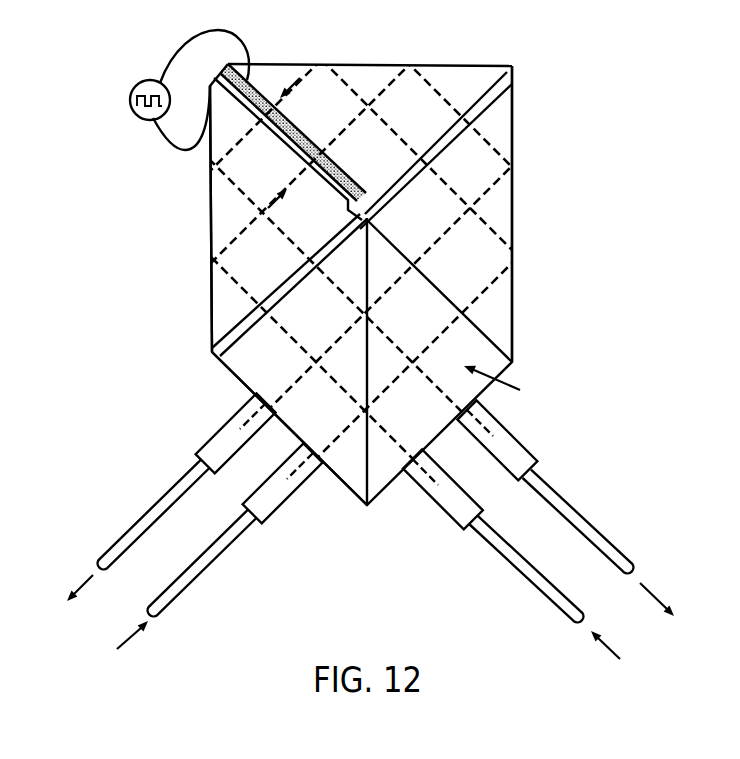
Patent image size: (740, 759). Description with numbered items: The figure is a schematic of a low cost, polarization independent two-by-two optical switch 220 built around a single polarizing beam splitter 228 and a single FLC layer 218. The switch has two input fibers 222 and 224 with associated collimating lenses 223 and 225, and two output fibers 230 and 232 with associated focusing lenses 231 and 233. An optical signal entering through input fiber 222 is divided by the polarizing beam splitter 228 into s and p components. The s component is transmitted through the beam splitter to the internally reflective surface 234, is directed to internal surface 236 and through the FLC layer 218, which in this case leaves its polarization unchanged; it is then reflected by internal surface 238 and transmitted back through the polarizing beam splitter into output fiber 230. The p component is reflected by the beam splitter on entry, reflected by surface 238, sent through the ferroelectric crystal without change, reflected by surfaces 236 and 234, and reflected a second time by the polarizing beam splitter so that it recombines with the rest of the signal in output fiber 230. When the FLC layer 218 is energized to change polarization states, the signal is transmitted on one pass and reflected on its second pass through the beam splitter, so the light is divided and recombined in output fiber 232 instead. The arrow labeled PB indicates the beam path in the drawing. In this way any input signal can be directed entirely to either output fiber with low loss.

The FLC layer 218 is at (195, 42).
The 2×2 switch 220 is at (457, 66).
The input fiber 222 is at (190, 588).
The collimating lens 223 is at (291, 503).
The input fiber 224 is at (530, 582).
The collimating lens 225 is at (447, 518).
The polarizing beam splitter 228 is at (257, 368).
The output fiber 230 is at (572, 510).
The focusing lens 231 is at (522, 450).
The output fiber 232 is at (120, 556).
The focusing lens 233 is at (199, 450).
The internally reflective surface 234 is at (514, 289).
The internal surface 236 is at (338, 48).
The internal surface 238 is at (210, 182).
The polarized beam PB is at (509, 386).